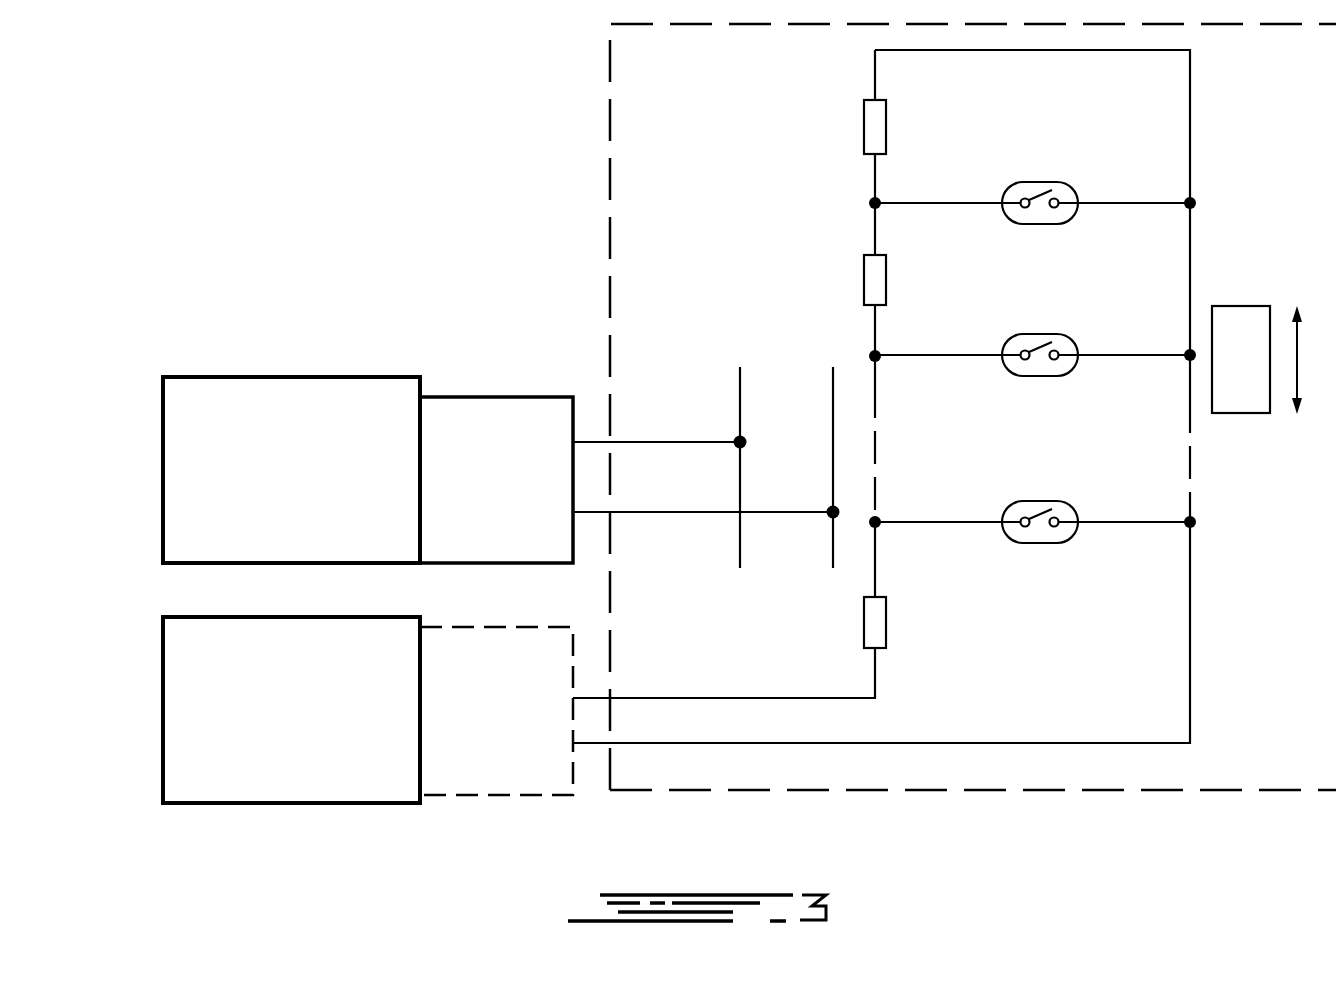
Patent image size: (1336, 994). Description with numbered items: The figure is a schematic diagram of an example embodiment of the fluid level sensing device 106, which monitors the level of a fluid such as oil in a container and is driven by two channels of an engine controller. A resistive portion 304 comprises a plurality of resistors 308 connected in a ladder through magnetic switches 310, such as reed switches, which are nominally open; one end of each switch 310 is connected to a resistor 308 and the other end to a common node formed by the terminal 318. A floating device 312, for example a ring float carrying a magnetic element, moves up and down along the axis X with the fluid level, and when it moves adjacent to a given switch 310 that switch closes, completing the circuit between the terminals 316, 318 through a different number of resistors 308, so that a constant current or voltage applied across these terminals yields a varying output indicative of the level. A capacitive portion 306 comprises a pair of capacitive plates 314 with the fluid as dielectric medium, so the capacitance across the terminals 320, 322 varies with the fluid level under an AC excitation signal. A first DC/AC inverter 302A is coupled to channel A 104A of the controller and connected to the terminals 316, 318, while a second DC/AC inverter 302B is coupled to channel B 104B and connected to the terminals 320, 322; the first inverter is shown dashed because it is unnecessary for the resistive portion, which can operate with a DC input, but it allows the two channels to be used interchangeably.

The fluid level sensing device 106 is at (610, 80).
The channel A 104A is at (163, 708).
The channel B 104B is at (163, 465).
The first DC/AC inverter 302A is at (495, 796).
The second DC/AC inverter 302B is at (498, 397).
The resistive portion 304 is at (815, 162).
The capacitive portion 306 is at (770, 345).
The resistor 308 is at (887, 128).
The magnetic switch 310 is at (1040, 225).
The floating device 312 is at (1240, 414).
The capacitive plate 314 is at (739, 540).
The terminal 316 is at (588, 698).
The terminal 318 is at (593, 745).
The terminal 320 is at (668, 441).
The terminal 322 is at (648, 512).